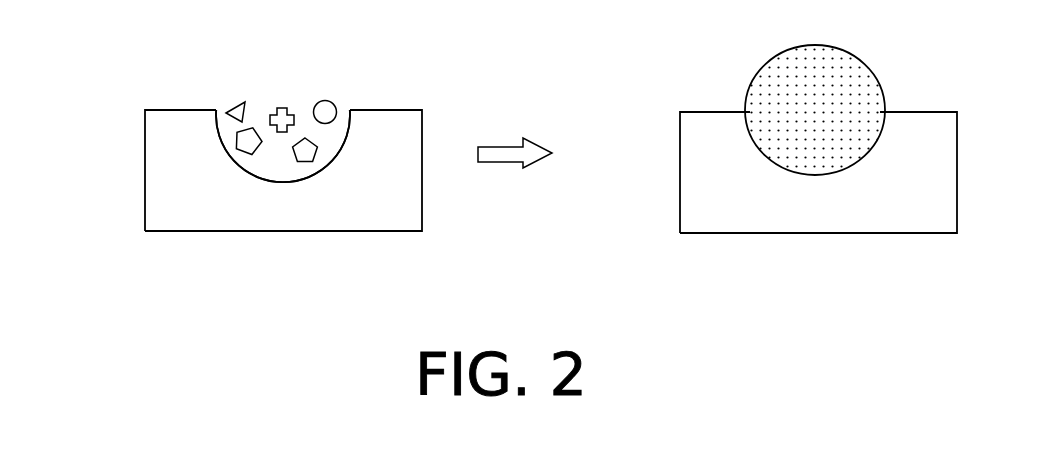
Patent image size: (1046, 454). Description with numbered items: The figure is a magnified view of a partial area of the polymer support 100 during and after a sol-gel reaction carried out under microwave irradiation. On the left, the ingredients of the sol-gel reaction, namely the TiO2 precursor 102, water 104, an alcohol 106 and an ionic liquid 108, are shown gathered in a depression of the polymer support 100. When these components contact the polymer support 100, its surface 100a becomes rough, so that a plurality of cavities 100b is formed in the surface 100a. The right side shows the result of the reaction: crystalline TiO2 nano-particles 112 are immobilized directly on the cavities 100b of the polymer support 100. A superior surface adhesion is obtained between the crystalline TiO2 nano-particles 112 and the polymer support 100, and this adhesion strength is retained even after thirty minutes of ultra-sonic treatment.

The polymer support 100 is at (380, 212).
The surface 100a is at (163, 110).
The cavities 100b is at (230, 145).
The TiO2 precursor 102 is at (287, 108).
The water 104 is at (219, 117).
The alcohol 106 is at (334, 106).
The ionic liquid 108 is at (259, 137).
The crystalline TiO2 nano-particles 112 is at (867, 70).